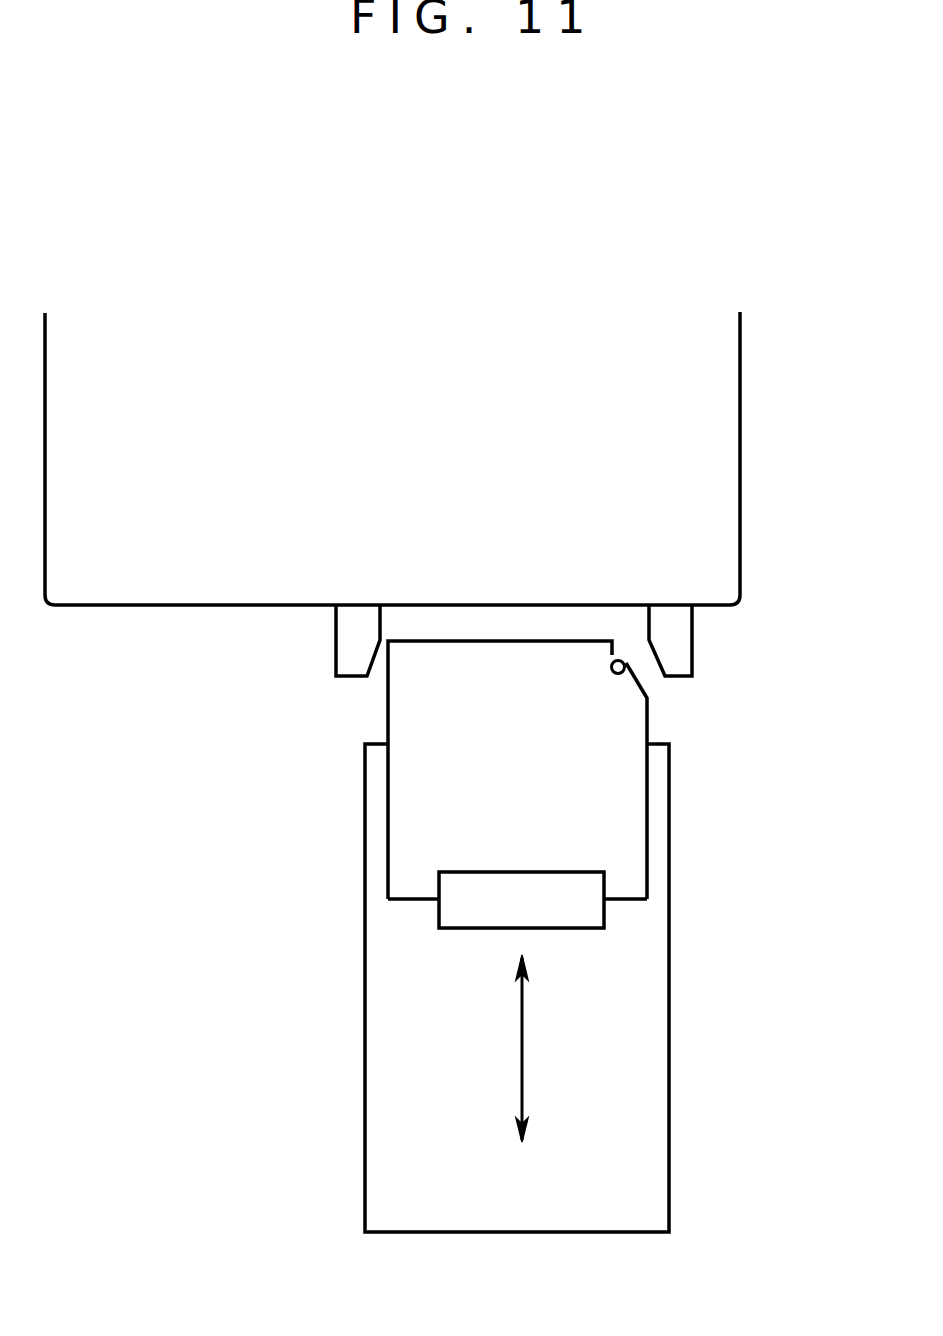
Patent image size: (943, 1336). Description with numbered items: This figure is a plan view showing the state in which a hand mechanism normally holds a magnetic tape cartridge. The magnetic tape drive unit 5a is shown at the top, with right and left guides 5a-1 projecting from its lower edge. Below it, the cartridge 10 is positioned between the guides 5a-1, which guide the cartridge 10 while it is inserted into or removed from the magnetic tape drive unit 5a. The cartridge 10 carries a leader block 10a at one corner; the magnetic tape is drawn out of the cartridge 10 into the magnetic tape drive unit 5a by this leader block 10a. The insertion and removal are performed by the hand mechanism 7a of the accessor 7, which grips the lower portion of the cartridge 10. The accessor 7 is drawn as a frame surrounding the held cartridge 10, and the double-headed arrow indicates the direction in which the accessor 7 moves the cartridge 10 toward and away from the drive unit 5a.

The magnetic tape drive unit 5a is at (741, 468).
The guide 5a-1 is at (348, 657).
The cartridge 10 is at (622, 793).
The leader block 10a is at (609, 669).
The accessor 7 is at (682, 1081).
The hand mechanism 7a is at (584, 920).